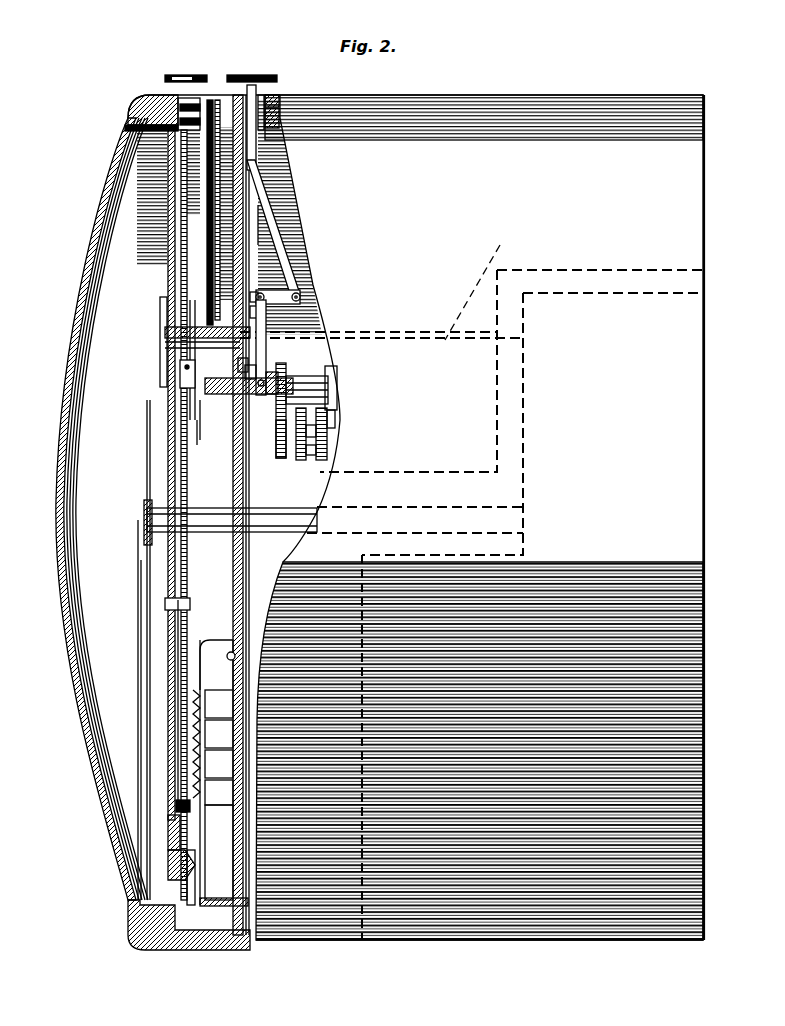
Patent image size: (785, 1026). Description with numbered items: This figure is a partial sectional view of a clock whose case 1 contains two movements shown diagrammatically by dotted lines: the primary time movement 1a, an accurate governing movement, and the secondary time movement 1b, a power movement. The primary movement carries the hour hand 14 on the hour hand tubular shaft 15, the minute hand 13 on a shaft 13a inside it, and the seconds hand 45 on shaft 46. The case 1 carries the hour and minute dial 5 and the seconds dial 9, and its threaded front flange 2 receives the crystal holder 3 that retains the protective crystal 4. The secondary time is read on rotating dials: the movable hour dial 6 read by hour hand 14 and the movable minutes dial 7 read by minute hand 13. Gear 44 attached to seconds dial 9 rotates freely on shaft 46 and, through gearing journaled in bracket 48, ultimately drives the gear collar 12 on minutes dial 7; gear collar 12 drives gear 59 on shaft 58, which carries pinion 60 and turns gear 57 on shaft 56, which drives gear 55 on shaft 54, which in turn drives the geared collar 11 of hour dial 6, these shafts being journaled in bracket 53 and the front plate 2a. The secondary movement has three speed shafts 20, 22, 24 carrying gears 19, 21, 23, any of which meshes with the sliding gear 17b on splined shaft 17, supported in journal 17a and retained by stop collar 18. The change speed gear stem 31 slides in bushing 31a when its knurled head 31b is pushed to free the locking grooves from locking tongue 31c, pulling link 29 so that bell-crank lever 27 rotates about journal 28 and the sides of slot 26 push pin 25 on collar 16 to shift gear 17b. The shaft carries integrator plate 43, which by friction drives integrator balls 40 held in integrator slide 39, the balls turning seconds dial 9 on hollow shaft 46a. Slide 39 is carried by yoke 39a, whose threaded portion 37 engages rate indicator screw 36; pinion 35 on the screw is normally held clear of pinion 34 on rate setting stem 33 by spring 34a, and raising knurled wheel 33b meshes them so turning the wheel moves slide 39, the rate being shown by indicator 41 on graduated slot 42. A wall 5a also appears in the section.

The clock case 1 is at (498, 93).
The primary time movement 1a is at (471, 424).
The secondary time movement 1b is at (511, 355).
The threaded front flange 2 is at (125, 120).
The front plate 2a is at (247, 575).
The crystal holder 3 is at (145, 98).
The protective crystal 4 is at (57, 497).
The hour and minute dial 5 is at (133, 911).
The inner wall 5a is at (173, 750).
The movable hour dial 6 is at (170, 857).
The movable minutes dial 7 is at (170, 835).
The seconds dial 9 is at (178, 383).
The geared collar 11 is at (187, 870).
The gear collar 12 is at (175, 813).
The minute hand 13 is at (143, 630).
The minute hand shaft 13a is at (143, 513).
The hour hand 14 is at (147, 442).
The hour hand tubular shaft 15 is at (290, 519).
The collar 16 is at (282, 380).
The splined shaft 17 is at (249, 386).
The journal 17a is at (270, 383).
The sliding gear 17b is at (280, 417).
The stop collar 18 is at (340, 397).
The gear 19 is at (288, 447).
The speed shaft 20 is at (300, 460).
The gear 21 is at (320, 460).
The speed shaft 22 is at (330, 430).
The gear 23 is at (323, 450).
The speed shaft 24 is at (337, 420).
The pin 25 is at (337, 372).
The slot 26 is at (273, 367).
The bell-crank lever 27 is at (270, 312).
The journal 28 is at (263, 300).
The link 29 is at (265, 225).
The change speed gear stem 31 is at (250, 95).
The bushing 31a is at (278, 125).
The knurled head 31b is at (257, 100).
The locking tongue 31c is at (275, 105).
The rate setting stem 33 is at (178, 78).
The knurled wheel 33b is at (185, 76).
The pinion 34 is at (172, 105).
The spring 34a is at (197, 108).
The pinion 35 is at (209, 115).
The rate indicator screw 36 is at (216, 115).
The threaded portion 37 is at (253, 195).
The integrator slide 39 is at (163, 373).
The yoke 39a is at (163, 300).
The integrator ball 40 is at (167, 360).
The indicator 41 is at (165, 607).
The graduated slot 42 is at (170, 645).
The integrator plate 43 is at (198, 420).
The gear 44 is at (262, 298).
The seconds hand 45 is at (170, 327).
The seconds hand shaft 46 is at (170, 345).
The hollow shaft 46a is at (250, 370).
The bracket 48 is at (202, 430).
The bracket 53 is at (227, 910).
The shaft 54 is at (221, 792).
The gear 55 is at (205, 815).
The shaft 56 is at (221, 704).
The gear 57 is at (200, 660).
The shaft 58 is at (221, 764).
The gear 59 is at (180, 725).
The pinion 60 is at (221, 734).